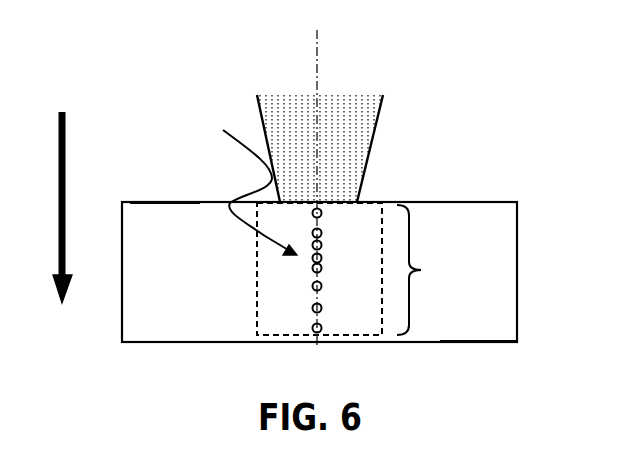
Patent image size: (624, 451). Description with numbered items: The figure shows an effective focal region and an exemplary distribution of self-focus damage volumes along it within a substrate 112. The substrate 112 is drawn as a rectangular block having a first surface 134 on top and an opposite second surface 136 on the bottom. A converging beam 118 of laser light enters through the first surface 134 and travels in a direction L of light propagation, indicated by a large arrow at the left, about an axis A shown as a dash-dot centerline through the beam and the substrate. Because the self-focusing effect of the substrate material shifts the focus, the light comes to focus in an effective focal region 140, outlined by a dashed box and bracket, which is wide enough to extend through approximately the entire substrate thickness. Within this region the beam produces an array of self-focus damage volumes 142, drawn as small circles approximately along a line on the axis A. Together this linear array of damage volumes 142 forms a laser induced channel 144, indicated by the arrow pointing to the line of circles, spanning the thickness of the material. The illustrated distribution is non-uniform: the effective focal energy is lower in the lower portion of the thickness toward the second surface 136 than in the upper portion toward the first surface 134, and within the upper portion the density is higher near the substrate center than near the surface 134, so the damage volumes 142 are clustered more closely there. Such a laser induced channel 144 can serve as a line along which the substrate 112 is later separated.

The substrate 112 is at (497, 201).
The beam 118 is at (332, 131).
The first surface 134 is at (147, 201).
The second surface 136 is at (480, 342).
The effective focal region 140 is at (367, 269).
The self-focus damage volumes 142 is at (312, 288).
The laser induced channel 144 is at (247, 175).
The axis A is at (315, 86).
The direction of light propagation L is at (71, 207).